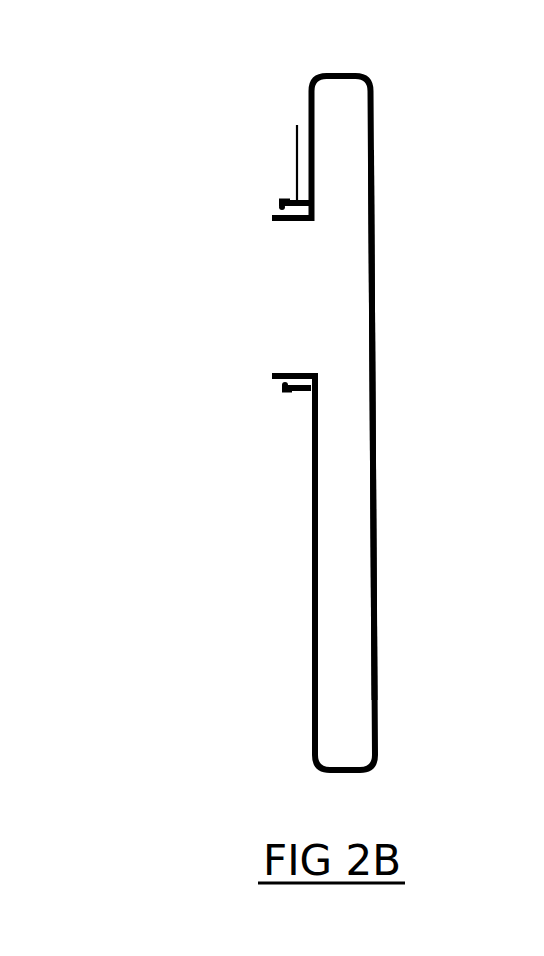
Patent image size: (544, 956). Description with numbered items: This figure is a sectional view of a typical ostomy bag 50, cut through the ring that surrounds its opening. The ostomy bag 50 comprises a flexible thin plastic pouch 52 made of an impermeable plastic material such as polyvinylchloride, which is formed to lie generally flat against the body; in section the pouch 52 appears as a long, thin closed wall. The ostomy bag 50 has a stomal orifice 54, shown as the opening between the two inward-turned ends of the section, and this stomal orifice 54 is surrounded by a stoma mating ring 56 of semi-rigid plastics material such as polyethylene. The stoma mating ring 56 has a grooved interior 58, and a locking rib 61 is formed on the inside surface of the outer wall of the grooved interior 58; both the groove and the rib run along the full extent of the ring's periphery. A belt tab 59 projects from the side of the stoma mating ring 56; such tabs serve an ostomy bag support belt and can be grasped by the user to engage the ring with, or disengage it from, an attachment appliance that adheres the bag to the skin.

The ostomy bag 50 is at (398, 102).
The flexible thin plastic pouch 52 is at (378, 663).
The stomal orifice 54 is at (315, 307).
The stoma mating ring 56 is at (265, 182).
The grooved interior 58 is at (276, 207).
The belt tabs 59 is at (293, 140).
The locking rib 61 is at (279, 198).